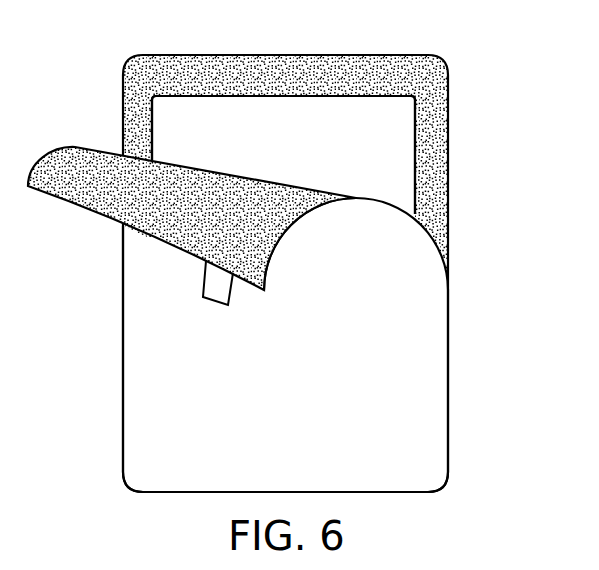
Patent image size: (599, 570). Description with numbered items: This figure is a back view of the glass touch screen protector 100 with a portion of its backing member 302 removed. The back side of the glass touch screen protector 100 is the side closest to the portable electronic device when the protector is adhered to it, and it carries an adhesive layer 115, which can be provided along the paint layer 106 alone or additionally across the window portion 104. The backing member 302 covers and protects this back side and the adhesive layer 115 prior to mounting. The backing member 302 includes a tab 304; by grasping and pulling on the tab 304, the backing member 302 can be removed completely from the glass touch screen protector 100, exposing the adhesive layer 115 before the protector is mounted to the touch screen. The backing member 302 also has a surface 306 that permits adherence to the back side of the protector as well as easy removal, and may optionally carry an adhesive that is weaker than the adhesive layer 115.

The glass touch screen protector 100 is at (459, 58).
The window portion 104 is at (305, 155).
The paint layer 106 is at (435, 167).
The adhesive layer 115 is at (442, 117).
The backing member 302 is at (300, 438).
The tab 304 is at (218, 284).
The surface 306 is at (80, 152).